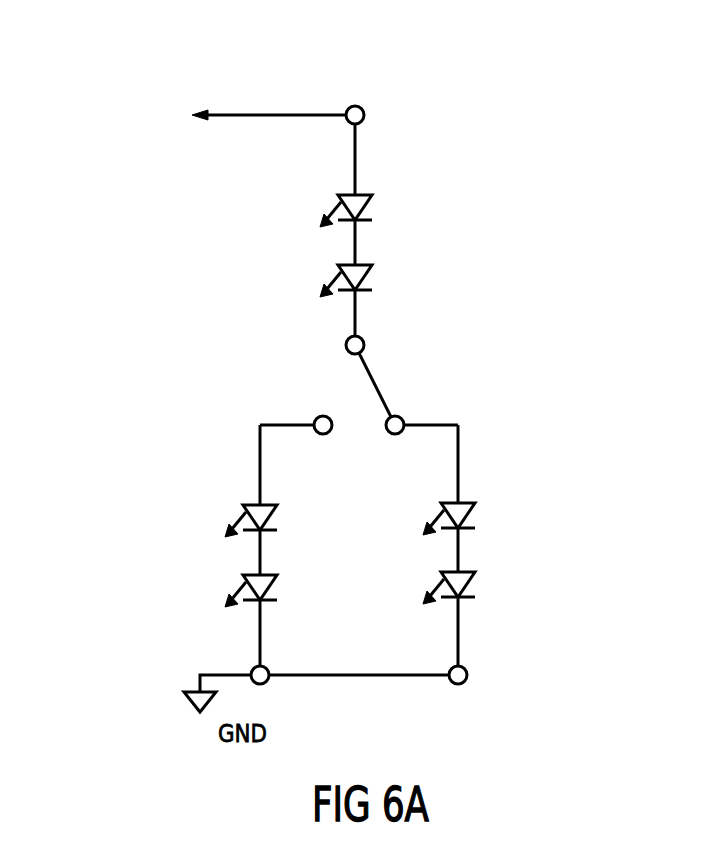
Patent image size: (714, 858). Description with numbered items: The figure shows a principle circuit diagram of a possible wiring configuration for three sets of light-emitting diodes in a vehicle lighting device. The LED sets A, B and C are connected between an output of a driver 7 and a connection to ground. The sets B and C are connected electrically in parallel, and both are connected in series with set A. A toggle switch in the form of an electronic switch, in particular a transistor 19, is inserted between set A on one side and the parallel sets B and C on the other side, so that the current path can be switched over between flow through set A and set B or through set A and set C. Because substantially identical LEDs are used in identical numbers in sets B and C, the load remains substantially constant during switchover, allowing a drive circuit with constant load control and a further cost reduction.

The driver 7 is at (269, 138).
The transistor 19 is at (422, 373).
The LED set A is at (435, 190).
The LED set B is at (170, 492).
The LED set C is at (523, 488).